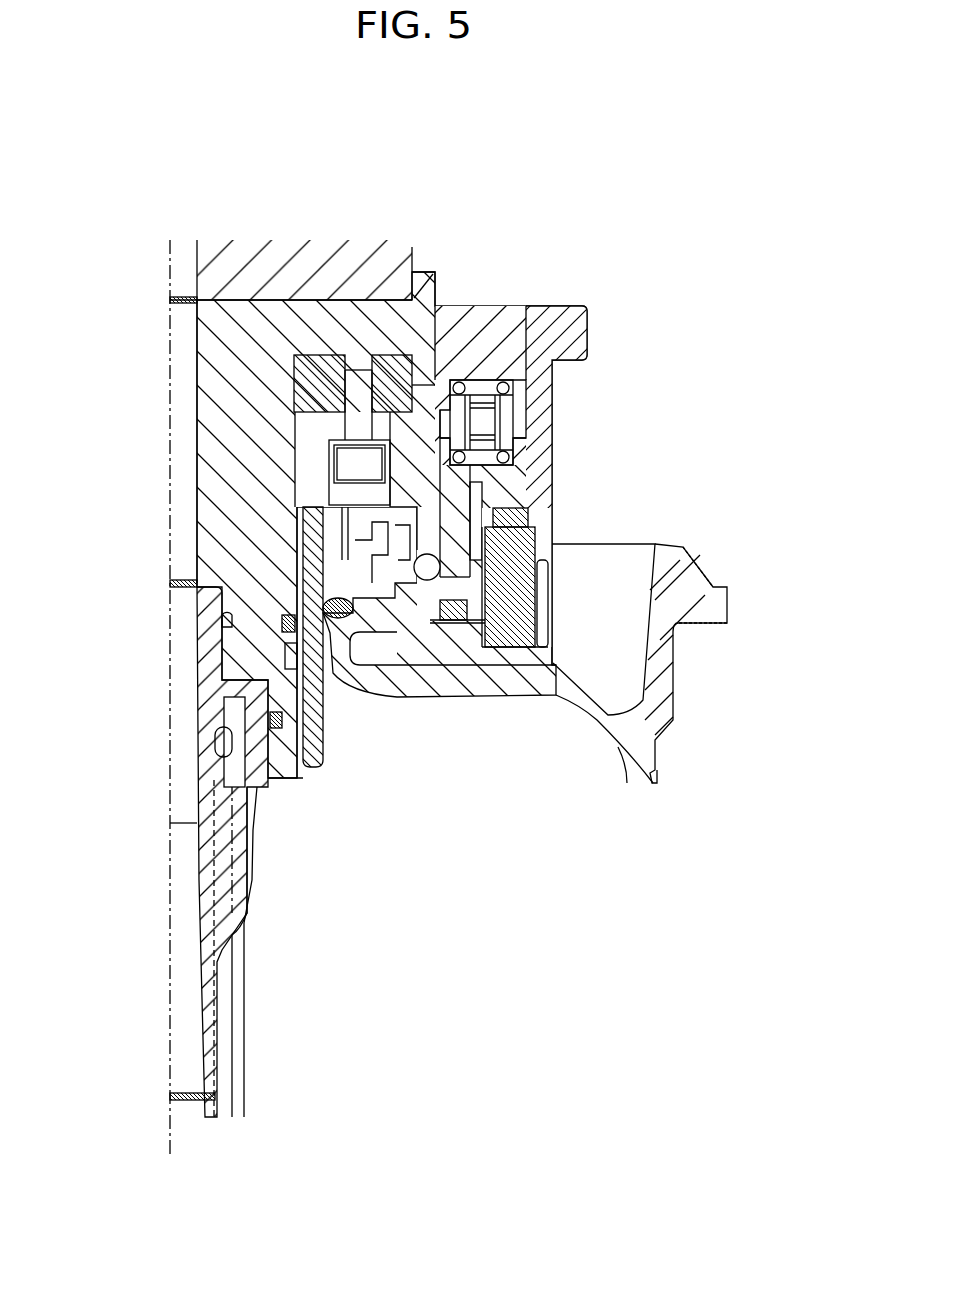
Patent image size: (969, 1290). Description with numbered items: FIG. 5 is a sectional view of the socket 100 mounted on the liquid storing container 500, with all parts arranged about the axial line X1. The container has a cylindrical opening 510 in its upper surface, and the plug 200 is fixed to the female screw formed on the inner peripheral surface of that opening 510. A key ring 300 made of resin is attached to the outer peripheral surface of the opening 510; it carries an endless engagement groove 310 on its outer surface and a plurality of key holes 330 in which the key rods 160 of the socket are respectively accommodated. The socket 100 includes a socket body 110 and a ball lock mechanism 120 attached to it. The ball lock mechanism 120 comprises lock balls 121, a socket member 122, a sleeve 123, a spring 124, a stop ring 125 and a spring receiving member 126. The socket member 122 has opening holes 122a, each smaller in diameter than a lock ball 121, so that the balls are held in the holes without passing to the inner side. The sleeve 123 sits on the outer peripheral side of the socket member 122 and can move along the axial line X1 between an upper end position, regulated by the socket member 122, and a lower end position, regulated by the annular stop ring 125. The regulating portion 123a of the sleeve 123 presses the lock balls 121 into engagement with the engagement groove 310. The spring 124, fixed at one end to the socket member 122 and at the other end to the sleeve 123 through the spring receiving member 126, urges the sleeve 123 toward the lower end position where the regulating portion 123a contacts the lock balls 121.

The socket 100 is at (600, 192).
The socket body 110 is at (428, 270).
The ball lock mechanism 120 is at (600, 286).
The lock ball 121 is at (414, 568).
The socket member 122 is at (482, 304).
The opening hole 122a is at (417, 547).
The sleeve 123 is at (590, 325).
The regulating portion 123a is at (485, 600).
The spring 124 is at (508, 387).
The stop ring 125 is at (445, 622).
The spring receiving member 126 is at (514, 457).
The key rod 160 is at (533, 535).
The plug 200 is at (318, 784).
The key ring 300 is at (541, 573).
The engagement groove 310 is at (430, 583).
The key hole 330 is at (535, 613).
The liquid storing container 500 is at (693, 531).
The opening 510 is at (353, 734).
The axial line X1 is at (170, 1097).